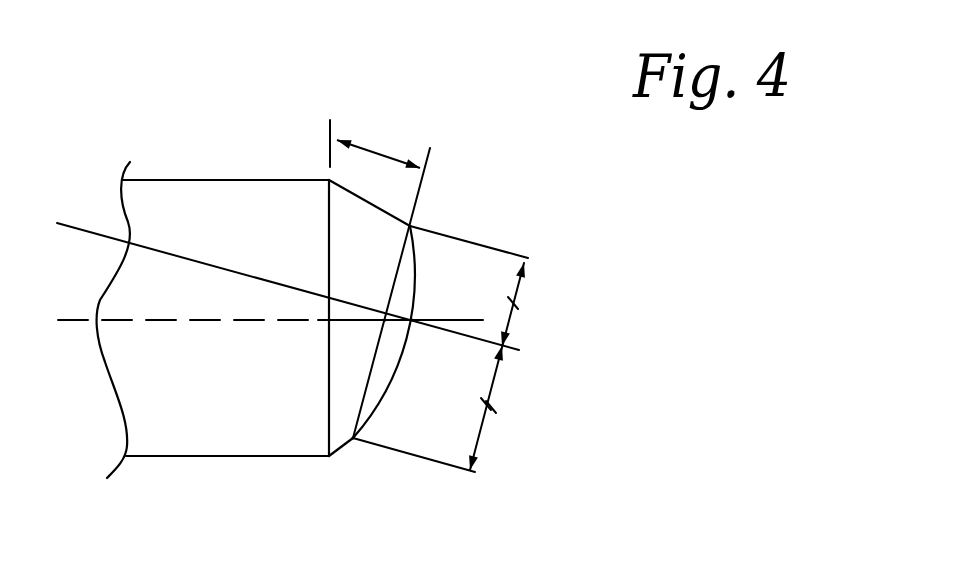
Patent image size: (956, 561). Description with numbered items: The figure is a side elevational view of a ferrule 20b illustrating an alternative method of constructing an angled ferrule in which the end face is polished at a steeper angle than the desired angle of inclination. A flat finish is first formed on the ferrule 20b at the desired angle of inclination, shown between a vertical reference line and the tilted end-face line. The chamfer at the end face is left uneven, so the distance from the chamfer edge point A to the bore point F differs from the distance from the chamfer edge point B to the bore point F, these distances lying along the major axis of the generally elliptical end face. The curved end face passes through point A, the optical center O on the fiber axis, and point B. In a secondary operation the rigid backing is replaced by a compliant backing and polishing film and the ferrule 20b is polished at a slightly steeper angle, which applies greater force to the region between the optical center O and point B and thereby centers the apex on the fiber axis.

The ferrule 20b is at (191, 165).
The chamfer edge point A is at (410, 226).
The chamfer edge point B is at (354, 438).
The optical center O is at (412, 320).
The bore point on end face F is at (376, 318).